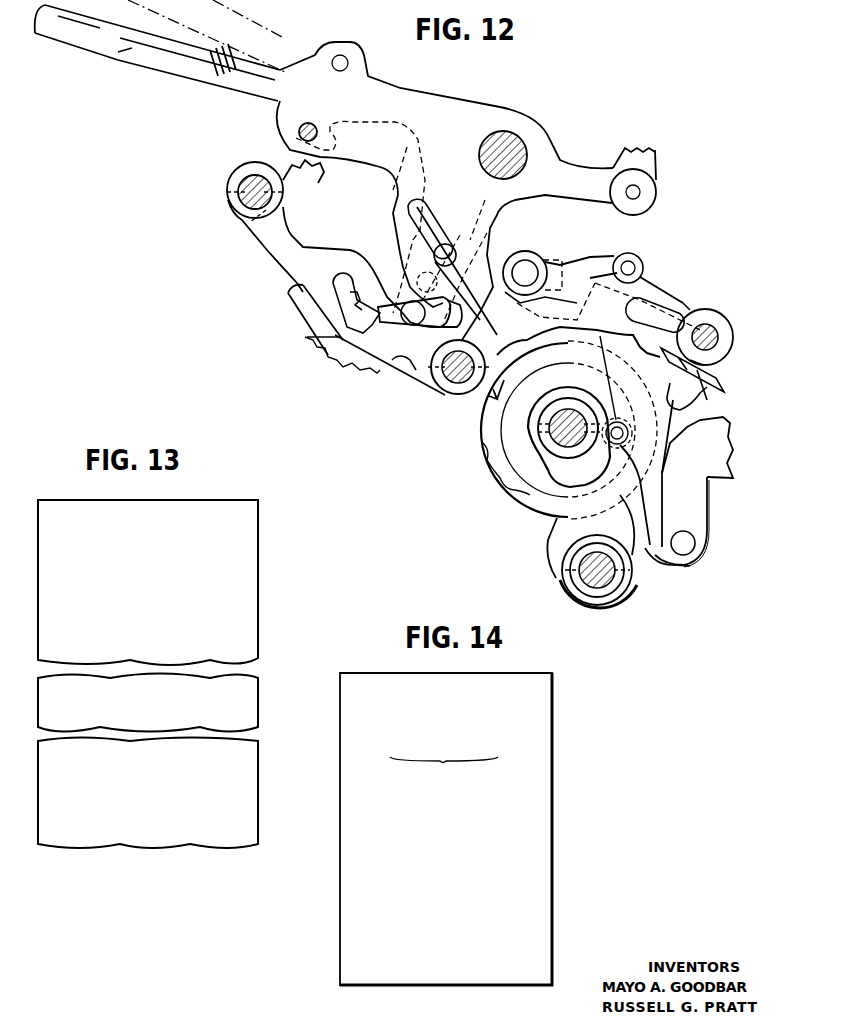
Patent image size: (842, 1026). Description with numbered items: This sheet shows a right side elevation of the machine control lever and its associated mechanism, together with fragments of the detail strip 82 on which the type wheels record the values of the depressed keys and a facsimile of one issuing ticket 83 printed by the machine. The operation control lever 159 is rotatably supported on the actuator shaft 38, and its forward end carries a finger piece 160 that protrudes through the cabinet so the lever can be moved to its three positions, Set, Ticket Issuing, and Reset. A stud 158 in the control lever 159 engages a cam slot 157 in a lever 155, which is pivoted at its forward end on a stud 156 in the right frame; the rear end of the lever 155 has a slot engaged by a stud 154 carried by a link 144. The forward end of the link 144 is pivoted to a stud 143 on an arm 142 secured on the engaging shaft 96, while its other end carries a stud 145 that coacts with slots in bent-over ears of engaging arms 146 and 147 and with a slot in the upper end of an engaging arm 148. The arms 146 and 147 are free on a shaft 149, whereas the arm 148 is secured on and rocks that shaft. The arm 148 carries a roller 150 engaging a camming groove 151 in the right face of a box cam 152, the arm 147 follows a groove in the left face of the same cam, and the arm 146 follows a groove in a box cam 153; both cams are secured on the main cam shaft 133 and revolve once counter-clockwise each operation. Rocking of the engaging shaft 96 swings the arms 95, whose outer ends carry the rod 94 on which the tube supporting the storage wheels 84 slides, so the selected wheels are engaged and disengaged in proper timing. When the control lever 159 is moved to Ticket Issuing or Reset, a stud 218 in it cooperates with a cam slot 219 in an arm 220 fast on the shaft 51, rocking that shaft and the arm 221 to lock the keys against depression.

In FIG. 12, the actuator shaft 38 is at (512, 142).
In FIG. 12, the shaft 51 is at (244, 180).
In FIG. 13, the detail strip 82 is at (128, 508).
In FIG. 14, the issuing ticket 83 is at (367, 680).
In FIG. 12, the storage wheels 84 is at (348, 372).
In FIG. 12, the rod 94 is at (326, 345).
In FIG. 12, the arms 95 is at (406, 370).
In FIG. 12, the engaging shaft 96 is at (445, 392).
In FIG. 12, the main cam shaft 133 is at (548, 433).
In FIG. 12, the arm 142 is at (494, 292).
In FIG. 12, the stud 143 is at (523, 258).
In FIG. 12, the link 144 is at (582, 280).
In FIG. 12, the stud 145 is at (712, 322).
In FIG. 12, the engaging arm 146 is at (720, 367).
In FIG. 12, the engaging arm 147 is at (708, 394).
In FIG. 12, the engaging arm 148 is at (722, 428).
In FIG. 12, the shaft 149 is at (612, 583).
In FIG. 12, the roller 150 is at (648, 448).
In FIG. 12, the camming groove 151 is at (527, 494).
In FIG. 12, the box cam 152 is at (560, 516).
In FIG. 12, the box cam 153 is at (490, 465).
In FIG. 12, the stud 154 is at (650, 313).
In FIG. 12, the lever 155 is at (646, 280).
In FIG. 12, the stud 156 is at (298, 133).
In FIG. 12, the cam slot 157 is at (412, 212).
In FIG. 12, the stud 158 is at (434, 256).
In FIG. 12, the operation control lever 159 is at (460, 104).
In FIG. 12, the finger piece 160 is at (58, 32).
In FIG. 12, the stud 218 is at (452, 320).
In FIG. 12, the cam slot 219 is at (334, 279).
In FIG. 12, the arm 220 is at (268, 250).
In FIG. 12, the arm 221 is at (316, 178).